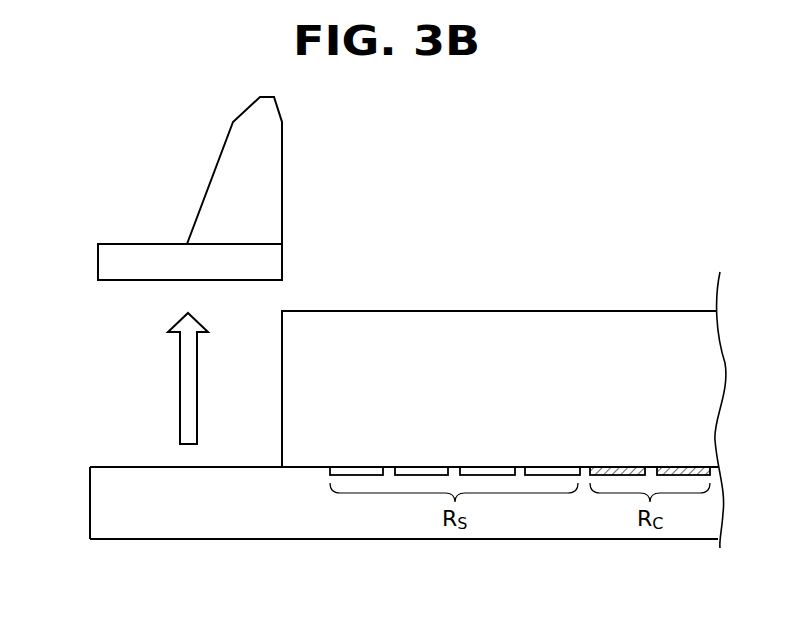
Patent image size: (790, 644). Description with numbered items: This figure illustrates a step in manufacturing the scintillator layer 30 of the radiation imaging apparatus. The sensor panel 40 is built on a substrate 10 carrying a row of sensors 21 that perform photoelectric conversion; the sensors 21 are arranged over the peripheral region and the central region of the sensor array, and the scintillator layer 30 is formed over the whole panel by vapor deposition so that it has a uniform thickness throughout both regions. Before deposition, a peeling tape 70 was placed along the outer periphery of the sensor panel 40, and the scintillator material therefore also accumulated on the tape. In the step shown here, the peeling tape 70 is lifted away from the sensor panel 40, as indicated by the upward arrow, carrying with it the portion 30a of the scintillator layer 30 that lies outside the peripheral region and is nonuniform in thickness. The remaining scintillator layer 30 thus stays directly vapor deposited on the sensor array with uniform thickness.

The substrate 10 is at (155, 544).
The sensor 21 is at (700, 472).
The scintillator layer 30 is at (563, 309).
The portion of the scintillator layer 30a is at (284, 102).
The sensor panel 40 is at (374, 542).
The peeling tape 70 is at (125, 240).